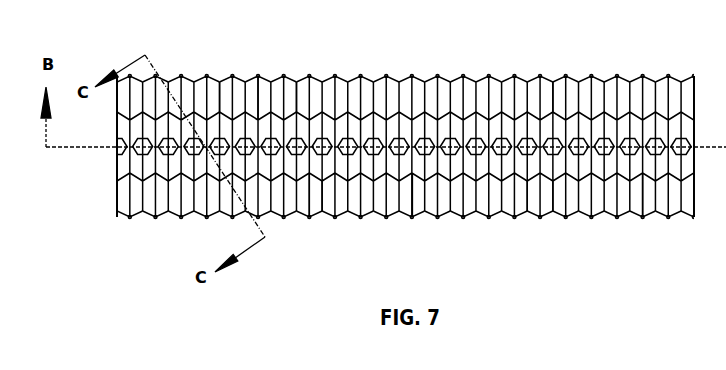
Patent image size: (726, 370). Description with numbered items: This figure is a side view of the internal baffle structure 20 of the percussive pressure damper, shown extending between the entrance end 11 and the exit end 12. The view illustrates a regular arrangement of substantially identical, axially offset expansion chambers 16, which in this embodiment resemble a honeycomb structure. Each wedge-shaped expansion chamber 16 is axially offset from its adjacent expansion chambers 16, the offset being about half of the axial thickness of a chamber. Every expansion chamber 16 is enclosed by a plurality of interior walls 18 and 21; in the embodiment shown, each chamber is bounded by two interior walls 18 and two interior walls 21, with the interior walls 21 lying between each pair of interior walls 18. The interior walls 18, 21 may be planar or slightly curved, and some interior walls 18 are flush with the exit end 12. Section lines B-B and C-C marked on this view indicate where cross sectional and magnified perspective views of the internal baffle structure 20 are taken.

The entrance end 11 is at (116, 233).
The exit end 12 is at (701, 236).
The expansion chamber 16 is at (261, 84).
The interior wall 18 is at (299, 92).
The internal baffle structure 20 is at (425, 36).
The interior wall 21 is at (212, 87).